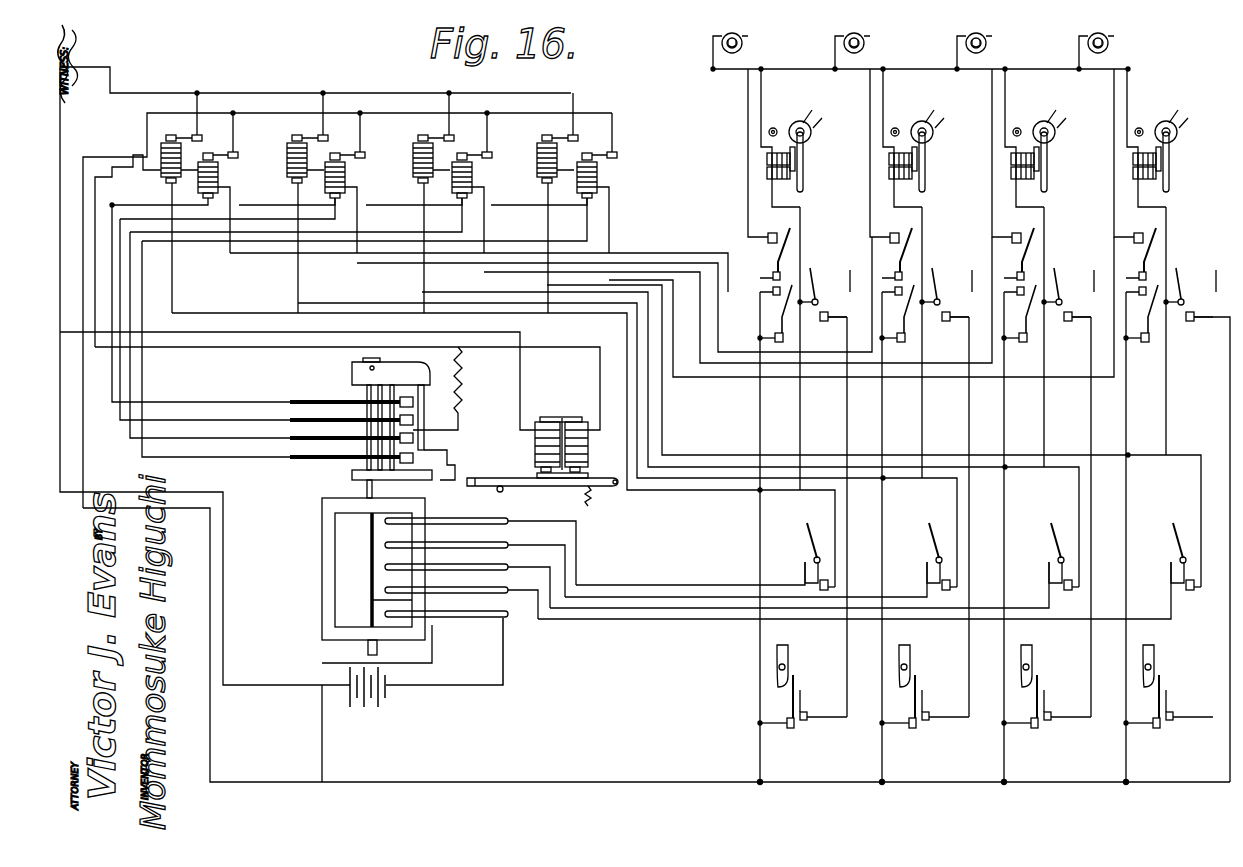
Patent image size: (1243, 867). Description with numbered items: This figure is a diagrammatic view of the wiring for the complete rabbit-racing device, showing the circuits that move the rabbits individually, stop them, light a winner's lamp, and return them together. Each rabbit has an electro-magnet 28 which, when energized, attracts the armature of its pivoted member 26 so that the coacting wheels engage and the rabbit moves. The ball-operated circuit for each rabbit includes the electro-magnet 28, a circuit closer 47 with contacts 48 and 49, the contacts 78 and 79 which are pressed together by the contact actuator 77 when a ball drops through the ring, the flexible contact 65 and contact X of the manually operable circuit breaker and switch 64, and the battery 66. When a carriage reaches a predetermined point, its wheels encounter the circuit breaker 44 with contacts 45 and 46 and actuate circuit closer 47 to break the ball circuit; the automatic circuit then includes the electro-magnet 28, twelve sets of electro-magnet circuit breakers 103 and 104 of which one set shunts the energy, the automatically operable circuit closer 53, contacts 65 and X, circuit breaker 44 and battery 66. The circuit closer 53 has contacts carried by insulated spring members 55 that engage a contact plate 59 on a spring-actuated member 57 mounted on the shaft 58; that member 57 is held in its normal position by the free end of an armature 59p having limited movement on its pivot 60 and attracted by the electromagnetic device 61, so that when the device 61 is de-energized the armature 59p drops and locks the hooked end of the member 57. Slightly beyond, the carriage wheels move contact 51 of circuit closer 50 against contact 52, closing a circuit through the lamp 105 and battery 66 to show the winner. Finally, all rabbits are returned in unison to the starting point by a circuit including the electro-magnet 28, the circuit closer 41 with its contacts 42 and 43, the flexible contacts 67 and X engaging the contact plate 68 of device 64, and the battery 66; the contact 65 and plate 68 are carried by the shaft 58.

The lamp 105 is at (745, 40).
The electro-magnet 28 is at (765, 165).
The member 26 is at (996, 151).
The contact 52 is at (939, 164).
The contact 51 is at (796, 238).
The circuit closer 50 is at (768, 272).
The contact 48 is at (1010, 281).
The contact 49 is at (1008, 288).
The circuit closer 47 is at (1020, 304).
The contact 46 is at (780, 300).
The circuit breaker 44 is at (775, 332).
The contact 45 is at (784, 322).
The contact 42 is at (986, 530).
The contact 43 is at (810, 555).
The circuit closer 41 is at (830, 580).
The contact actuator 77 is at (790, 660).
The contact 78 is at (793, 698).
The contact 79 is at (1006, 702).
The electro-magnet circuit breaker 103 is at (160, 172).
The electro-magnet circuit breaker 104 is at (220, 176).
The contact plate 59 is at (413, 371).
The manually operable circuit breaker and switch 64 is at (300, 570).
The member 57 is at (424, 438).
The spring members 55 is at (300, 404).
The automatically operable circuit closer 53 is at (352, 476).
The shaft 58 is at (383, 488).
The contact plate 68 is at (340, 525).
The flexible contact 65 is at (368, 616).
The contacts 67 is at (455, 520).
The contact X is at (512, 618).
The battery 66 is at (380, 705).
The electromagnetic device 61 is at (553, 418).
The armature 59p is at (545, 480).
The pivot 60 is at (600, 490).